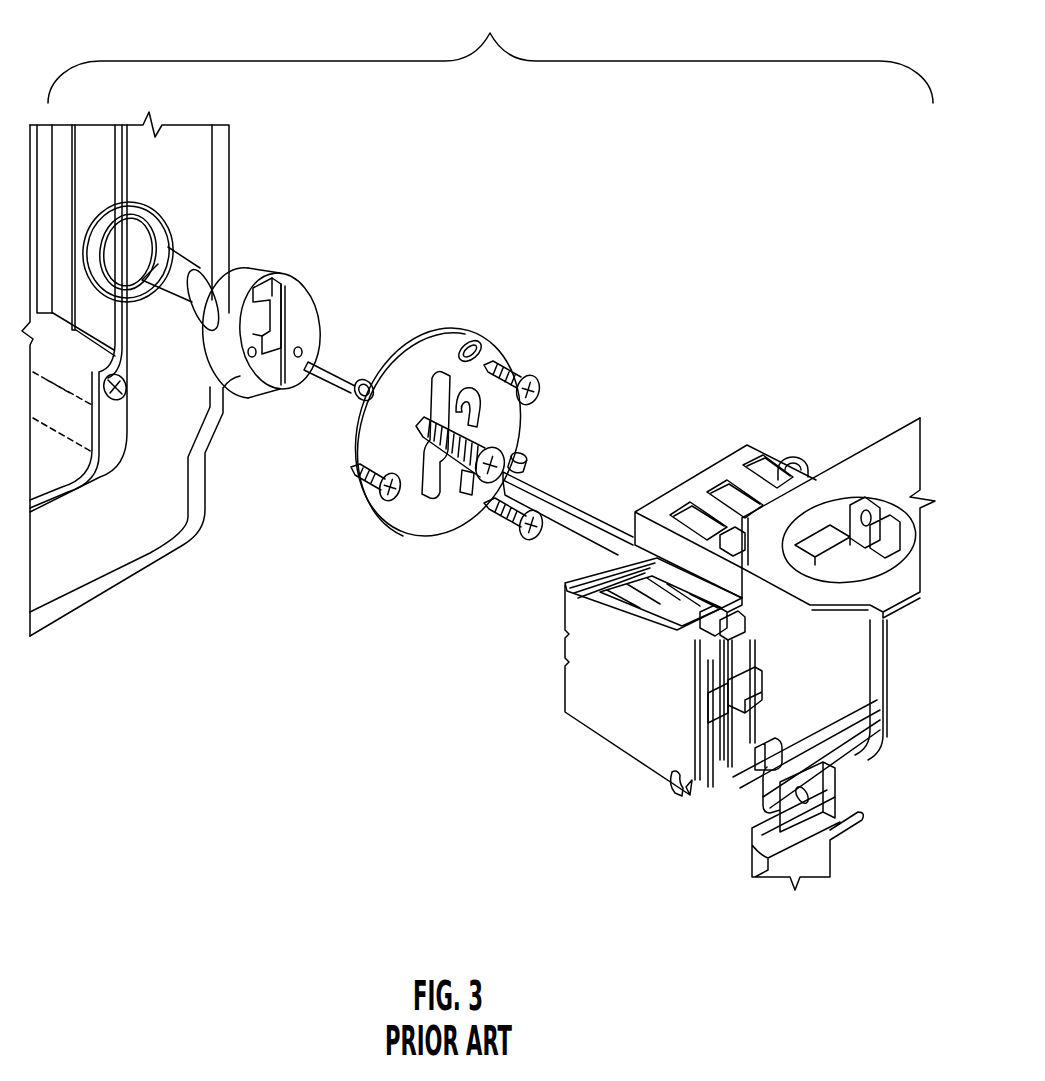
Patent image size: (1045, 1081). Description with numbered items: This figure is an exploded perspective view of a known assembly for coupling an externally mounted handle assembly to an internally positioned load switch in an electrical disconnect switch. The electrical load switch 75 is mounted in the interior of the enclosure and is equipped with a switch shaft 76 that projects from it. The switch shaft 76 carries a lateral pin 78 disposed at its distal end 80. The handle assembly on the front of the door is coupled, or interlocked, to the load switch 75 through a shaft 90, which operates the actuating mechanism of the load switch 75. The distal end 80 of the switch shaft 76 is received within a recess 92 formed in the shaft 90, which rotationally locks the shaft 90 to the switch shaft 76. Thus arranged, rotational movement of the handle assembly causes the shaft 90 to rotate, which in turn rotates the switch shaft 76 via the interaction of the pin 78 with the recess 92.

The electrical load switch 75 is at (633, 725).
The switch shaft 76 is at (570, 495).
The lateral pin 78 is at (523, 457).
The distal end 80 is at (500, 498).
The shaft 90 is at (264, 243).
The recess 92 is at (290, 338).